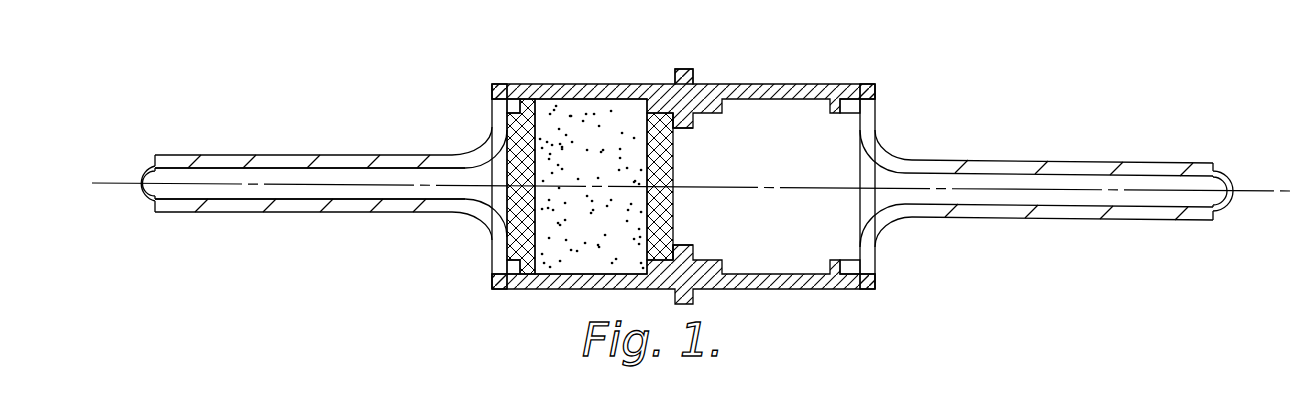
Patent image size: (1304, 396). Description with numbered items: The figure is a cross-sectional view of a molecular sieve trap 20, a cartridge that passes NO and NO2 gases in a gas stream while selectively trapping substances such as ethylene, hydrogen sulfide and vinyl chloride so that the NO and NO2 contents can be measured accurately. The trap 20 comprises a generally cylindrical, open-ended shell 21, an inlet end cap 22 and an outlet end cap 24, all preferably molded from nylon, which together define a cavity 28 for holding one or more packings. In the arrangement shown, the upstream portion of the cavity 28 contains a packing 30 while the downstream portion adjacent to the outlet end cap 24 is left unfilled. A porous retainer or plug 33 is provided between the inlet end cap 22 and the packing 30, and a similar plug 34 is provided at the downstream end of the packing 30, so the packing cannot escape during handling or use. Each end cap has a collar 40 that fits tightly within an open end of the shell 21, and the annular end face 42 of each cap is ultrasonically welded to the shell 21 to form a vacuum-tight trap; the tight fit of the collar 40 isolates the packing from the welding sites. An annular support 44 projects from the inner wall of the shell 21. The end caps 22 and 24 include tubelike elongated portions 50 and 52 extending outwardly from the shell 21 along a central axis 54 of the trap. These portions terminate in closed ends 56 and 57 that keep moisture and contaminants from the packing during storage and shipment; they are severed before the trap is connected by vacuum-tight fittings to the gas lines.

The molecular sieve trap 20 is at (683, 167).
The shell 21 is at (600, 84).
The inlet end cap 22 is at (302, 179).
The outlet end cap 24 is at (1071, 178).
The cavity 28 is at (662, 186).
The packing 30 is at (624, 120).
The porous retainer or plug 33 is at (505, 125).
The plug 34 is at (674, 245).
The collar 40 is at (520, 104).
The annular end face 42 is at (520, 90).
The annular support 44 is at (681, 129).
The elongated portion 50 is at (329, 155).
The elongated portion 52 is at (1041, 160).
The central axis 54 is at (284, 187).
The closed end 56 is at (137, 173).
The closed end 57 is at (1236, 184).